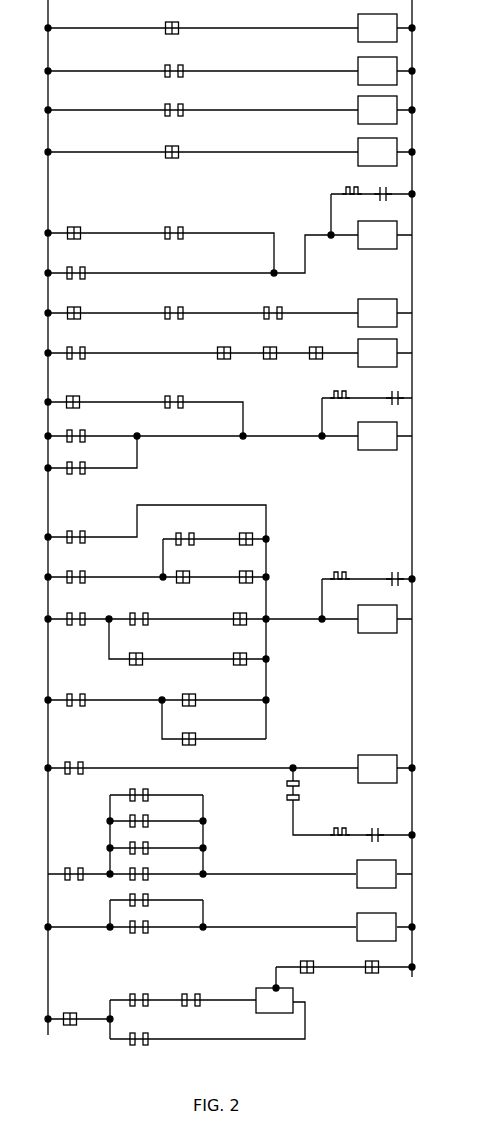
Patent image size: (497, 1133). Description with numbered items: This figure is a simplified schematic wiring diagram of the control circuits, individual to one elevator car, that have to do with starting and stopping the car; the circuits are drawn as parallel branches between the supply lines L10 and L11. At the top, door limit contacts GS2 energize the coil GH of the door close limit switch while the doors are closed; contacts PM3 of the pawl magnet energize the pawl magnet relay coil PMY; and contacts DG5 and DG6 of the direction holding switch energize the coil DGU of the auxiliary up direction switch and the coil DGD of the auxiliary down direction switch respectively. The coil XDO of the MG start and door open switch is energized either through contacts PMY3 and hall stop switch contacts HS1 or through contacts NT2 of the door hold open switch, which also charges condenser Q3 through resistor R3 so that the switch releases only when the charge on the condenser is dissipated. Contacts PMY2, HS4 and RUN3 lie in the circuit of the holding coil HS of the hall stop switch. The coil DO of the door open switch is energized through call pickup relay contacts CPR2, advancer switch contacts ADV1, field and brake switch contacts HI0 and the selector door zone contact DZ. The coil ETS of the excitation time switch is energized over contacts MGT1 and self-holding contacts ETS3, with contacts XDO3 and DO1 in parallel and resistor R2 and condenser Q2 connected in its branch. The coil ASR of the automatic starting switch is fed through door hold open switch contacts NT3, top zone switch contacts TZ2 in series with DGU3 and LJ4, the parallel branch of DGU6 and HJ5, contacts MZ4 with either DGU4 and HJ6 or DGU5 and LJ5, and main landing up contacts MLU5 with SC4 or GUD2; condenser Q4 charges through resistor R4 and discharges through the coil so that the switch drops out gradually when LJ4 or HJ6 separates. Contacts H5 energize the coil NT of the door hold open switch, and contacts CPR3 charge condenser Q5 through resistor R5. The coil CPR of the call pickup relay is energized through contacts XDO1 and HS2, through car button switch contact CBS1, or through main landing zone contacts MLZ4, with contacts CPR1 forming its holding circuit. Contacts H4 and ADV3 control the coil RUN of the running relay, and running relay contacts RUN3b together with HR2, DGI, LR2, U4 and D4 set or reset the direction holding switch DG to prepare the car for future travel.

The supply line L10 is at (65, 517).
The supply line L11 is at (412, 488).
The door limit contacts GS2 is at (175, 43).
The door close limit switch coil GH is at (377, 28).
The pawl magnet contacts PM3 is at (176, 66).
The pawl magnet relay coil PMY is at (377, 71).
The direction holding switch contacts DG5 is at (176, 105).
The auxiliary up direction switch coil DGU is at (377, 110).
The direction holding switch contacts DG6 is at (176, 146).
The auxiliary down direction switch coil DGD is at (377, 152).
The resistor R3 is at (348, 192).
The condenser Q3 is at (380, 194).
The pawl magnet relay contacts PMY3 is at (80, 219).
The hall stop switch contacts HS1 is at (178, 220).
The door hold open switch contacts NT2 is at (80, 260).
The MG start and door open switch coil XDO is at (377, 235).
The pawl magnet relay contacts PMY2 is at (80, 299).
The hall stop switch contacts HS4 is at (178, 300).
The running relay contacts RUN3 is at (277, 300).
The hall stop switch coil HS is at (375, 304).
The call pickup relay contacts CPR2 is at (80, 340).
The advanced advancer switch contacts ADV1 is at (220, 347).
The field and brake switch contacts HI0 is at (268, 347).
The selector door zone contact DZ is at (328, 372).
The door open switch coil DO is at (377, 353).
The MG set time relay contacts MGT1 is at (79, 389).
The excitation time switch self-holding contacts ETS3 is at (178, 389).
The resistor R2 is at (344, 396).
The condenser Q2 is at (392, 398).
The start and door open switch contacts XDO3 is at (80, 423).
The excitation time switch coil ETS is at (377, 436).
The door open switch contacts DO1 is at (80, 456).
The door hold open switch contacts NT3 is at (80, 524).
The auxiliary up direction switch contacts DGU6 is at (189, 526).
The higher call switch contacts HJ5 is at (250, 526).
The top zone switch contacts TZ2 is at (80, 564).
The auxiliary up direction switch contacts DGU3 is at (187, 564).
The lower call switch contacts LJ4 is at (250, 564).
The resistor R4 is at (344, 577).
The condenser Q4 is at (392, 579).
The middle zone switch contacts MZ4 is at (80, 606).
The auxiliary up direction switch contacts DGU4 is at (143, 606).
The higher call switch contact HJ6 is at (244, 606).
The automatic starting switch coil ASR is at (377, 619).
The auxiliary up direction switch contacts DGU5 is at (140, 646).
The lower call switch contacts LJ5 is at (244, 646).
The main landing up switch contacts MLU5 is at (80, 687).
The selection switch contacts SC4 is at (193, 687).
The group up dispatching switch contacts GUD2 is at (193, 726).
The field and brake switch contacts H5 is at (78, 755).
The door hold open switch coil NT is at (377, 769).
The call pickup relay contacts CPR3 is at (306, 789).
The resistor R5 is at (344, 833).
The condenser Q5 is at (374, 835).
The main landing zone switch contacts MLZ4 is at (141, 791).
The call pickup relay contacts CPR1 is at (141, 817).
The car button switch contact CBS1 is at (141, 844).
The start and door open switch contacts XDO1 is at (78, 861).
The hall stop switch contacts HS2 is at (141, 870).
The call pickup relay coil CPR is at (376, 874).
The field and brake switch contacts H4 is at (141, 896).
The advanced advancer switch contacts ADV3 is at (141, 923).
The running relay coil RUN is at (376, 927).
The up direction switch contacts U4 is at (307, 961).
The down direction switch contacts D4 is at (370, 961).
The direction holding switch DG is at (300, 1018).
The running relay contacts RUN3b is at (70, 1013).
The highest call reversal switch contacts HR2 is at (143, 987).
The direction holding switch contacts DGI is at (195, 987).
The lowest call reversal switch contacts LR2 is at (143, 1026).